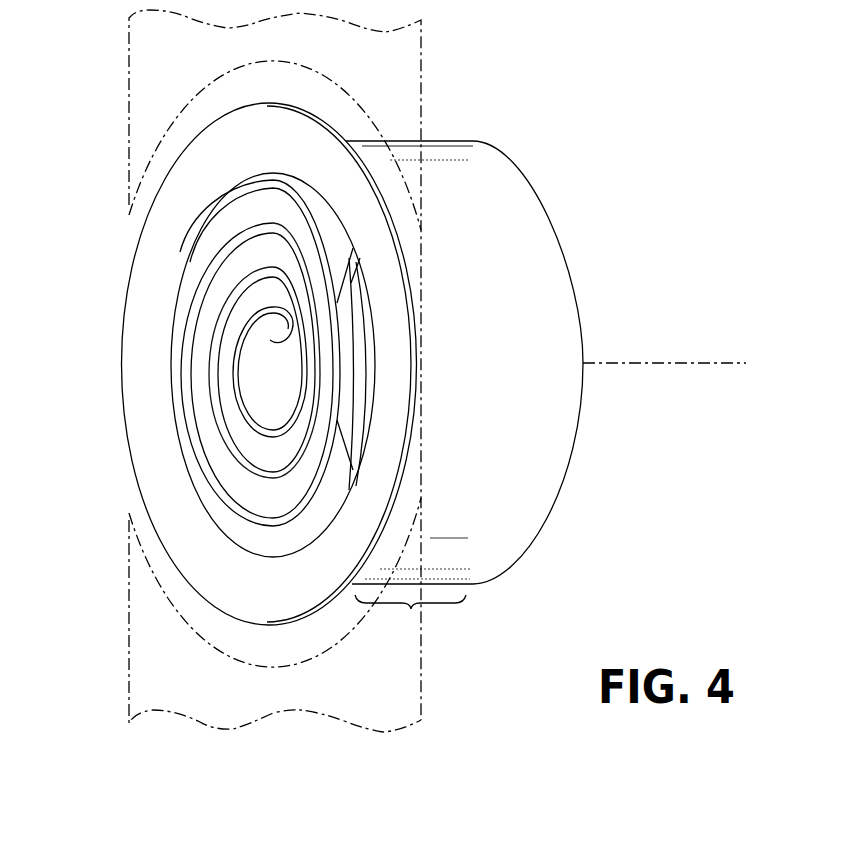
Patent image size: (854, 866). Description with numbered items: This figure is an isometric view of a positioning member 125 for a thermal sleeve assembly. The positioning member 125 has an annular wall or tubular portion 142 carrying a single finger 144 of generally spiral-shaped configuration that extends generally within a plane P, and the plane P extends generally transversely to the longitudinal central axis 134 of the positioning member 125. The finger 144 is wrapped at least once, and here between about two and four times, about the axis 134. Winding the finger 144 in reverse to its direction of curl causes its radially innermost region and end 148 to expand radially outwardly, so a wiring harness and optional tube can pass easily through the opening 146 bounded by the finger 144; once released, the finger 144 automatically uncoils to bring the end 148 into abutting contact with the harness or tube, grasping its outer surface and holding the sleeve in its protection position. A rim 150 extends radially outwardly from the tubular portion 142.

The positioning member 125 is at (381, 362).
The longitudinal central axis 134 is at (670, 365).
The annular wall 142 is at (411, 609).
The finger 144 is at (198, 449).
The opening 146 is at (257, 368).
The radially innermost region and end 148 is at (282, 352).
The rim 150 is at (208, 124).
The plane P is at (426, 80).